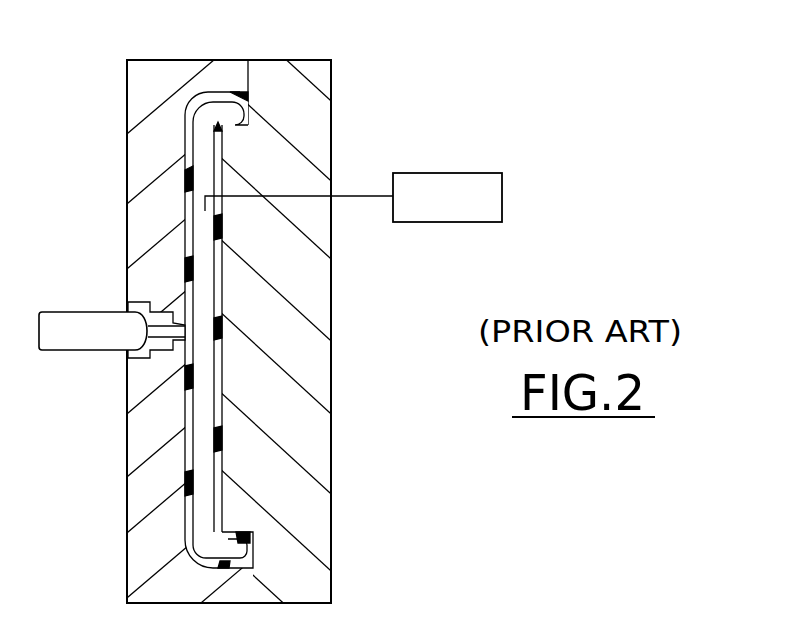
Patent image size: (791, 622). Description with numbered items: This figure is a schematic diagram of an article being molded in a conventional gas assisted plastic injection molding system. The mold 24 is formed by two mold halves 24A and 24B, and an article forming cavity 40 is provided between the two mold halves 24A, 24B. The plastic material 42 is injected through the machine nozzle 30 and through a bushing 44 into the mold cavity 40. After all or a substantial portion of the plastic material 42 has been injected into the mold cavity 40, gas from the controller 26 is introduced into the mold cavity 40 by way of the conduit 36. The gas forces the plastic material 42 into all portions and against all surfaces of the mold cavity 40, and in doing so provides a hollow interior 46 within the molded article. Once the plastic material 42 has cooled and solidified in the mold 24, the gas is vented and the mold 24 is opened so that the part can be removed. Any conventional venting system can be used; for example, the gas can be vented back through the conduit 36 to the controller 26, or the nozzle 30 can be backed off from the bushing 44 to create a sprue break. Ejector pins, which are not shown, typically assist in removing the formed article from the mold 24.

The mold 24 is at (124, 147).
The mold half 24A is at (170, 65).
The mold half 24B is at (307, 62).
The controller 26 is at (473, 172).
The machine nozzle 30 is at (58, 314).
The conduit 36 is at (362, 192).
The article forming cavity 40 is at (208, 292).
The plastic material 42 is at (187, 412).
The bushing 44 is at (134, 356).
The hollow interior 46 is at (205, 425).